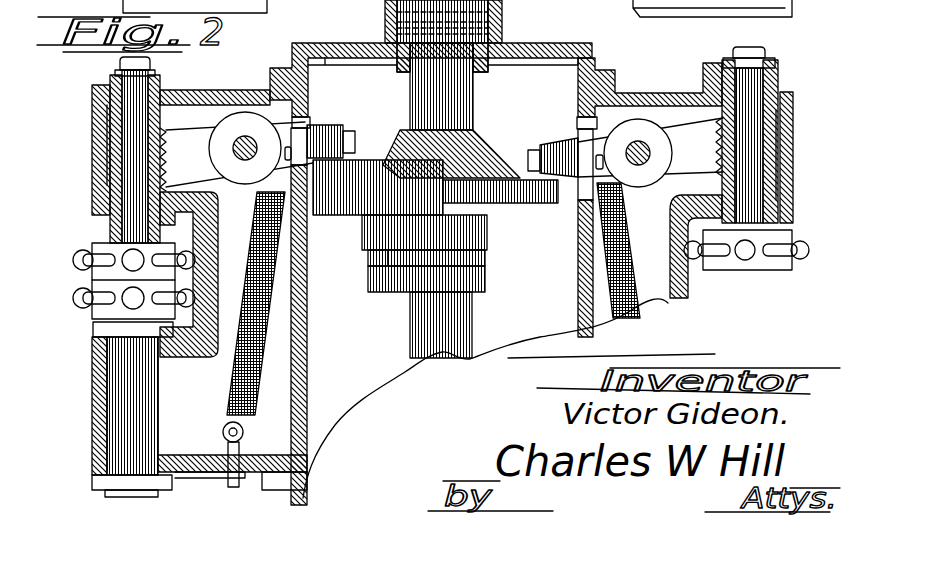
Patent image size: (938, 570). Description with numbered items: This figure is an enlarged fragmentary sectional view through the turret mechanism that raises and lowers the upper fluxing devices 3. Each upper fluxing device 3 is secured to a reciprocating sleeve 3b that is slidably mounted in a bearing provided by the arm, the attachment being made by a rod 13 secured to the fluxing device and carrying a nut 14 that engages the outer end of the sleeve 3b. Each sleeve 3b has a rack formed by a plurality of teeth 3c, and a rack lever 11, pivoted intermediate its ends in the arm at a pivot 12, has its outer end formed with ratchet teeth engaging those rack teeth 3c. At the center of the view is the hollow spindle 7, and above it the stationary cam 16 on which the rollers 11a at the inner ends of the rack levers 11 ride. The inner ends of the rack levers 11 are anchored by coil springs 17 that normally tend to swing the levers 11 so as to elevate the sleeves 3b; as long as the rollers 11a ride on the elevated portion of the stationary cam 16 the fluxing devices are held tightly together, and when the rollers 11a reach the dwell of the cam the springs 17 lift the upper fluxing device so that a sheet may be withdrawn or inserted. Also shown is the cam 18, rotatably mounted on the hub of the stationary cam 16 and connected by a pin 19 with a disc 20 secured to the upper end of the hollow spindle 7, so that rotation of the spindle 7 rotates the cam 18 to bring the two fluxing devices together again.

The fluxing device 3 is at (108, 268).
The reciprocating sleeve 3b is at (797, 78).
The rack teeth 3c is at (152, 133).
The hollow spindle 7 is at (432, 330).
The rack lever 11 is at (231, 205).
The roller 11a is at (328, 152).
The pivot 12 is at (257, 140).
The rod 13 is at (125, 186).
The nut 14 is at (133, 62).
The stationary cam 16 is at (562, 200).
The coil spring 17 is at (235, 372).
The cam 18 is at (345, 195).
The pin 19 is at (376, 262).
The disc 20 is at (485, 285).